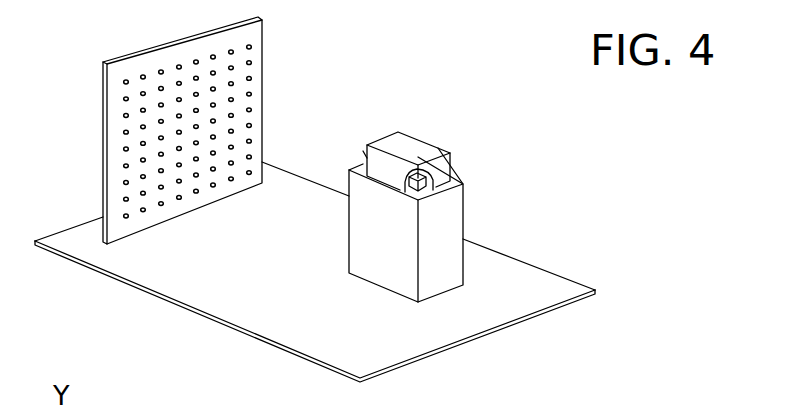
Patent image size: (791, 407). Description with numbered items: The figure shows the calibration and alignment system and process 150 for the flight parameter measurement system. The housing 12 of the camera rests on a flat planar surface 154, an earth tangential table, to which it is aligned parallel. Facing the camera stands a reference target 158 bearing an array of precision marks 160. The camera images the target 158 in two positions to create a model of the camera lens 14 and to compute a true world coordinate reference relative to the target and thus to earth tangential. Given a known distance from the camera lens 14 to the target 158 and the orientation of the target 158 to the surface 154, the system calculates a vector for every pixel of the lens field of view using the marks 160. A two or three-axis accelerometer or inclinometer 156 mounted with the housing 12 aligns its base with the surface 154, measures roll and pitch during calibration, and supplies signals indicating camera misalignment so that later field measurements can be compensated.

The housing 12 is at (401, 131).
The camera lens 14 is at (365, 152).
The calibration and alignment system and process 150 is at (543, 154).
The planar surface 154 is at (552, 271).
The accelerometer or inclinometer 156 is at (402, 189).
The reference target 158 is at (103, 87).
The precision marks 160 is at (252, 47).